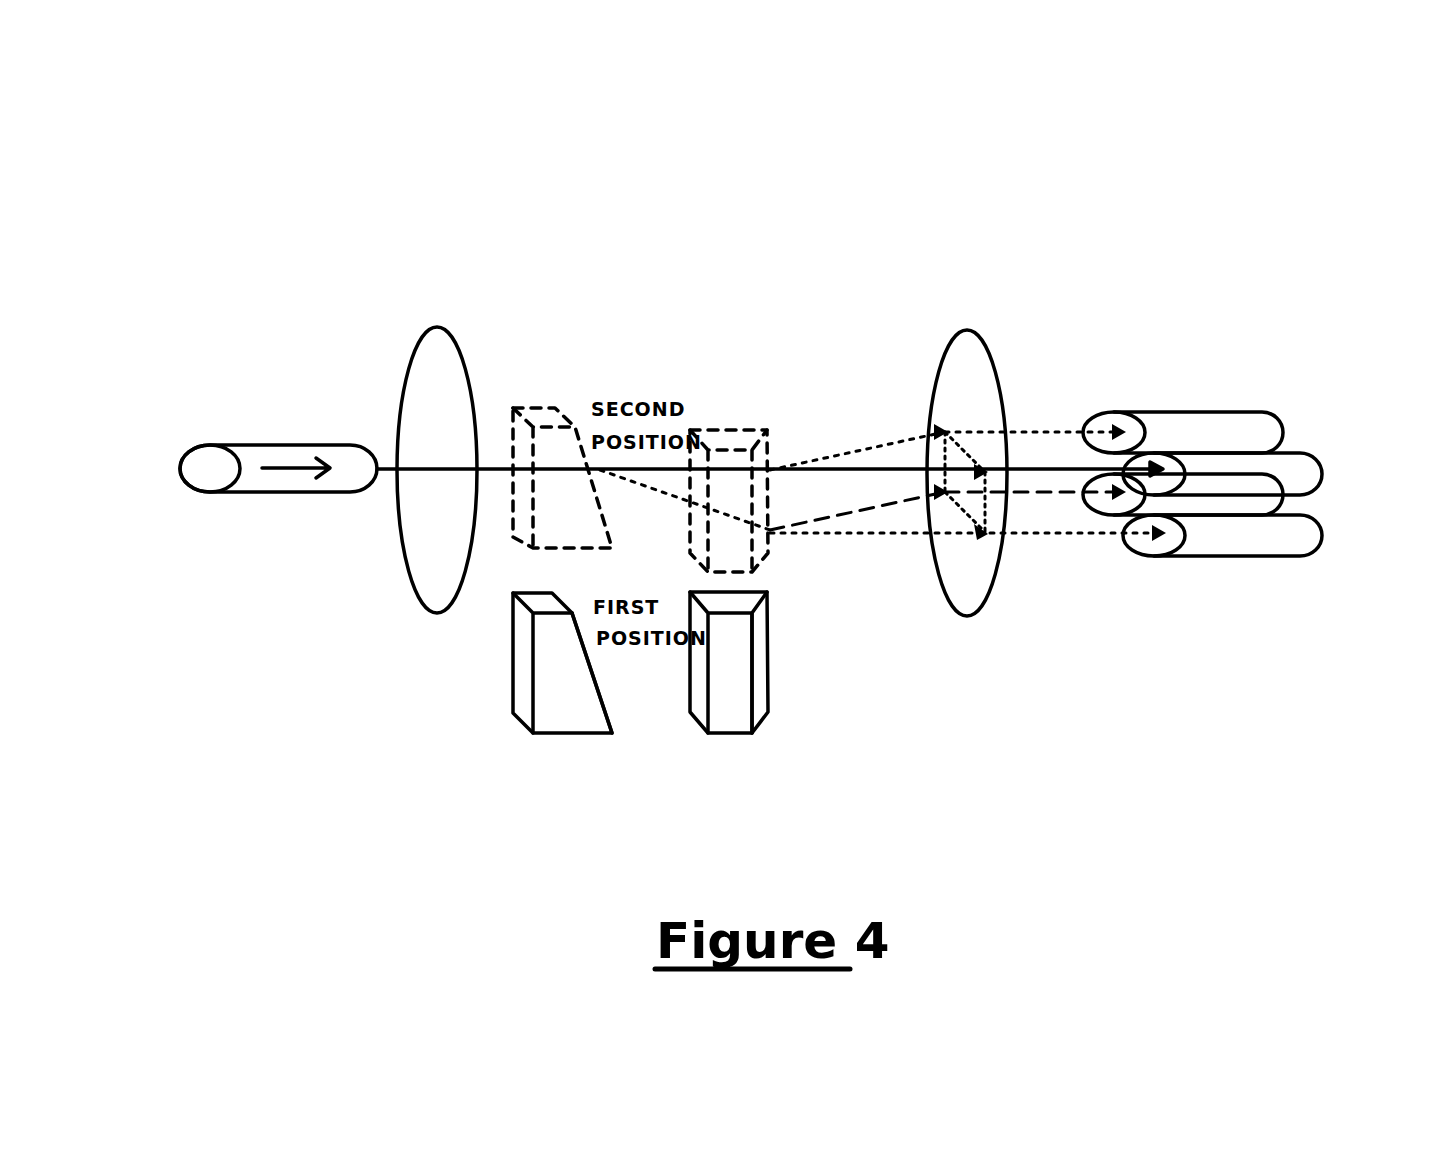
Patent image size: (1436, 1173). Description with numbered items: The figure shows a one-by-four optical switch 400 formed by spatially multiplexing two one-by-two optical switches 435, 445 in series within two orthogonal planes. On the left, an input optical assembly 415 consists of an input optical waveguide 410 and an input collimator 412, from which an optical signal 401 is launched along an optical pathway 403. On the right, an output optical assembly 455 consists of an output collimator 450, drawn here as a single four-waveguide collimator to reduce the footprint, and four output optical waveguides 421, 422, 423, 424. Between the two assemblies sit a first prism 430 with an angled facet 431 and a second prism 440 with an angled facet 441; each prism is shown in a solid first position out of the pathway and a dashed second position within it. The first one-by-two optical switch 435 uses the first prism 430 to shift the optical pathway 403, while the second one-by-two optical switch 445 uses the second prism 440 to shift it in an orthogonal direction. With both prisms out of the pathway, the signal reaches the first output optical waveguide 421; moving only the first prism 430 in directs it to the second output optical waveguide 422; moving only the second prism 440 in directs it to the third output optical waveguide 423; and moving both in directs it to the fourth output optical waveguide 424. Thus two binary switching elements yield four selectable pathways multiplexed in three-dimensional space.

The 1×4 optical switch 400 is at (246, 215).
The optical signal 401 is at (284, 446).
The optical pathway 403 is at (485, 468).
The input optical waveguide 410 is at (212, 470).
The input collimator 412 is at (438, 328).
The input optical assembly 415 is at (343, 561).
The first prism 430 is at (565, 737).
The angled facet 431 is at (605, 698).
The first 1×2 optical switch 435 is at (484, 745).
The second prism 440 is at (728, 737).
The angled facet 441 is at (760, 656).
The second 1×2 optical switch 445 is at (818, 745).
The output collimator 450 is at (937, 354).
The output optical assembly 455 is at (1092, 331).
The first output optical waveguide 421 is at (1306, 470).
The second output optical waveguide 422 is at (1276, 545).
The third output optical waveguide 423 is at (1228, 428).
The fourth output optical waveguide 424 is at (1258, 502).